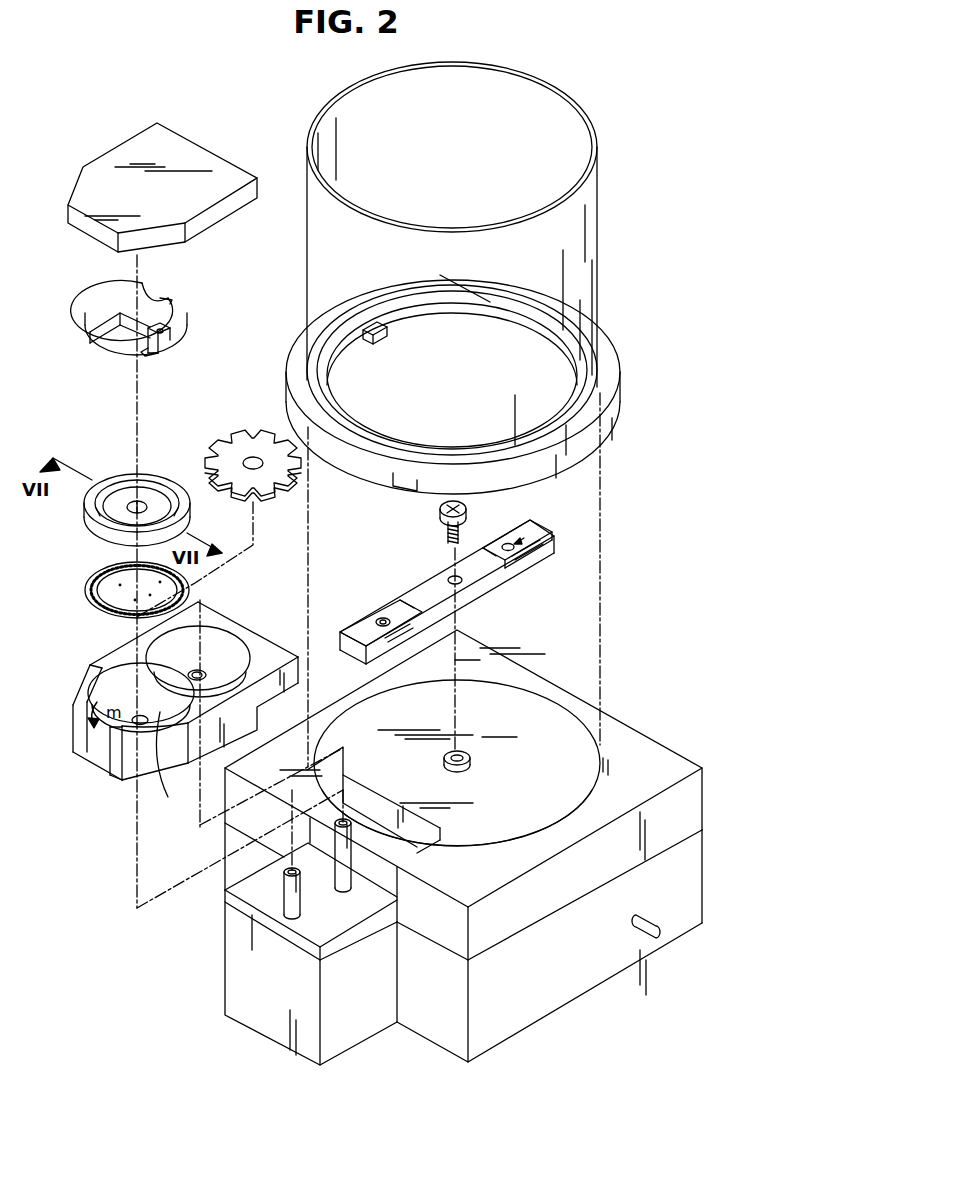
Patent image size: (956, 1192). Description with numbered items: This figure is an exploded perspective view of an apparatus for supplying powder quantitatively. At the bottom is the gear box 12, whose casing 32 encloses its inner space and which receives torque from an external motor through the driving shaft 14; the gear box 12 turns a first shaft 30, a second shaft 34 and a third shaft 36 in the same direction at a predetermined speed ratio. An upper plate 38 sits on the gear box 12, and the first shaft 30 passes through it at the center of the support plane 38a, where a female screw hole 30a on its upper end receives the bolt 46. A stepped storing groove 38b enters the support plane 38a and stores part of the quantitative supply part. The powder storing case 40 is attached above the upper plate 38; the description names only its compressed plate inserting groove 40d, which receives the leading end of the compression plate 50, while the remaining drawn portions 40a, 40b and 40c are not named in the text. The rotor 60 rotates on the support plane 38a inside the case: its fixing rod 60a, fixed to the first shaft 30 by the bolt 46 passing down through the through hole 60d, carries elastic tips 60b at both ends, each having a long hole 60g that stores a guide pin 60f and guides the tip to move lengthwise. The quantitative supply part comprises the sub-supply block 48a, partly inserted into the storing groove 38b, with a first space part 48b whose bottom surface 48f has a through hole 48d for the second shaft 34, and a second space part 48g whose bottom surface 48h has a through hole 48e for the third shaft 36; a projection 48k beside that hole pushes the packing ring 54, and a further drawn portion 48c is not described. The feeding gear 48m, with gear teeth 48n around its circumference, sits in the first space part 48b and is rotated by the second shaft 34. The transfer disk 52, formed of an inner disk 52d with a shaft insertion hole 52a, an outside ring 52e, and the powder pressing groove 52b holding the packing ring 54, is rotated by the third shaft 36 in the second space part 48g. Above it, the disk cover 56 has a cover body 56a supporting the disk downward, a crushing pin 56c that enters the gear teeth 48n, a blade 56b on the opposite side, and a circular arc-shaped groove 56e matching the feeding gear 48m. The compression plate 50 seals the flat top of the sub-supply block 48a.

The gear box 12 is at (435, 845).
The driving shaft 14 is at (650, 938).
The first shaft 30 is at (470, 756).
The female screw hole 30a is at (480, 758).
The casing 32 is at (556, 978).
The second shaft 34 is at (343, 886).
The third shaft 36 is at (290, 912).
The upper plate 38 is at (435, 789).
The support plane 38a is at (570, 757).
The storing groove 38b is at (298, 818).
The powder storing case 40 is at (465, 290).
The flange 40a is at (605, 357).
The cylindrical wall 40b is at (305, 213).
The tab 40c is at (366, 327).
The compressed plate inserting groove 40d is at (405, 484).
The bolt 46 is at (445, 514).
The sub-supply block 48a is at (163, 712).
The first space part 48b is at (214, 645).
The wall 48c is at (100, 750).
The through hole 48d is at (200, 670).
The through hole 48e is at (135, 718).
The bottom surface 48f is at (222, 660).
The second space part 48g is at (115, 672).
The bottom surface 48h is at (170, 767).
The projection 48k is at (88, 705).
The feeding gear 48m is at (252, 461).
The gear teeth 48n is at (272, 433).
The compression plate 50 is at (193, 128).
The transfer disk 52 is at (134, 498).
The shaft insertion hole 52a is at (150, 512).
The powder pressing groove 52b is at (90, 480).
The inner disk 52d is at (93, 521).
The outside ring 52e is at (103, 486).
The packing ring 54 is at (88, 590).
The disk cover 56 is at (131, 303).
The cover body 56a is at (102, 311).
The blade 56b is at (170, 342).
The crushing pin 56c is at (170, 300).
The circular arc-shaped groove 56e is at (154, 296).
The rotor 60 is at (480, 609).
The fixing rod 60a is at (482, 586).
The elastic tips 60b is at (550, 550).
The through hole 60d is at (463, 588).
The guide pin 60f is at (383, 614).
The long hole 60g is at (376, 622).